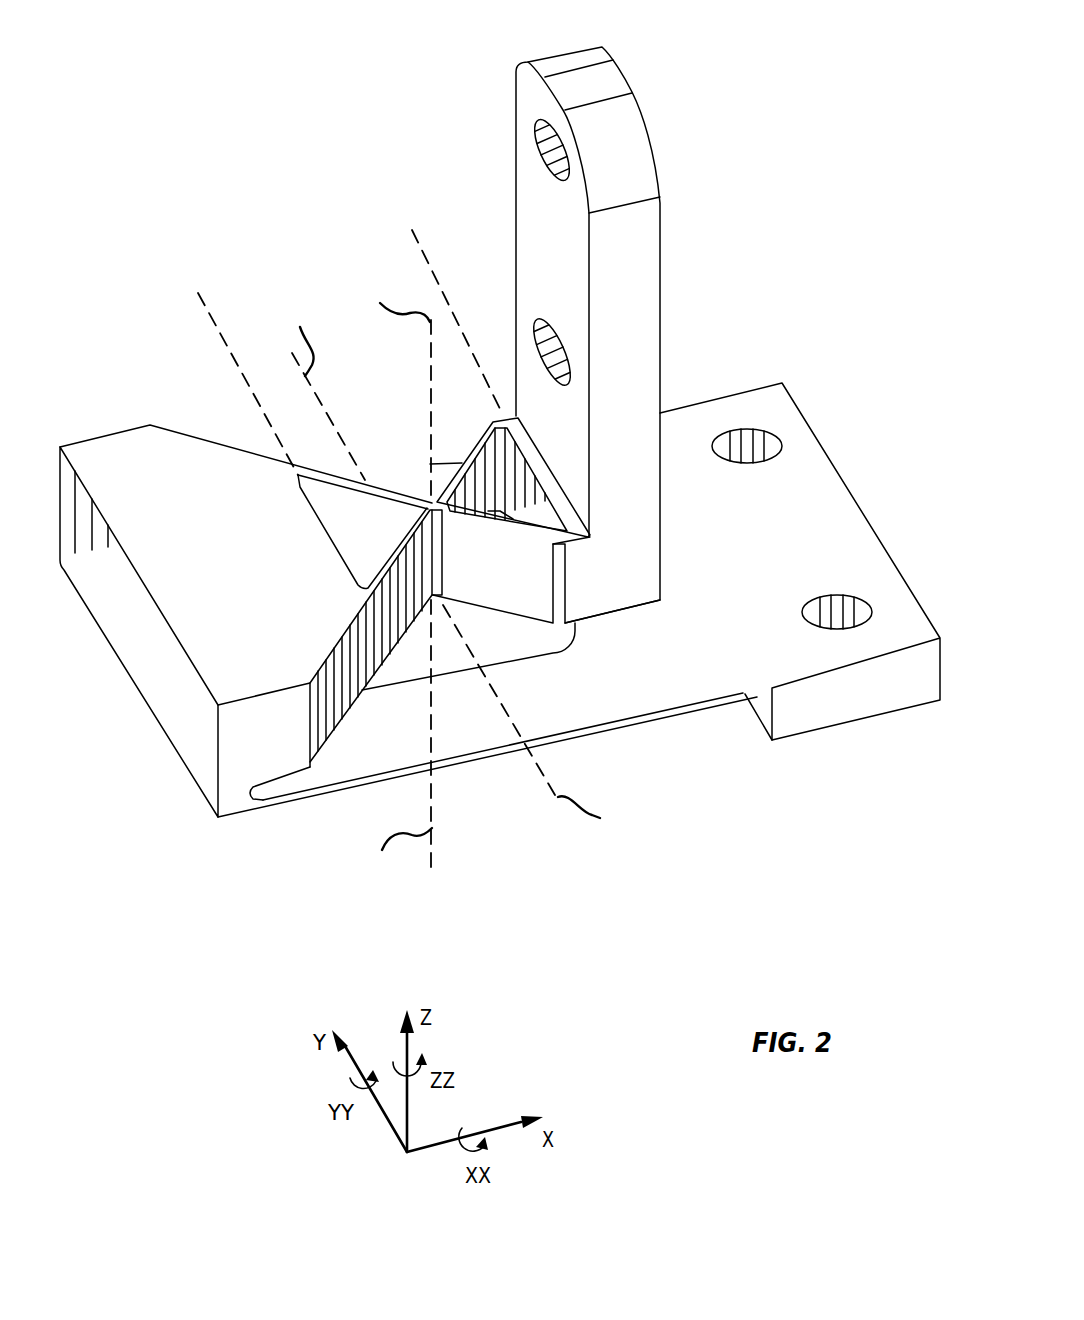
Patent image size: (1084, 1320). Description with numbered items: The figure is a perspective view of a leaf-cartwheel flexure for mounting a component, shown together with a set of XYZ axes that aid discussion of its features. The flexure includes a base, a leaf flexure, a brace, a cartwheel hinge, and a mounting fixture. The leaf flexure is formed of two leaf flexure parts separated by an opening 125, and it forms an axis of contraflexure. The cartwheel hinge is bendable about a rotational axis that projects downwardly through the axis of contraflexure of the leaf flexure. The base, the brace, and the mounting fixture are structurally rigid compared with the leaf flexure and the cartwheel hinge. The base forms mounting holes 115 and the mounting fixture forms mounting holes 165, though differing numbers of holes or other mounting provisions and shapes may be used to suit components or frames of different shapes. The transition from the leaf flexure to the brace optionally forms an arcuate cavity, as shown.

The mounting holes 115 is at (746, 427).
The opening 125 is at (510, 640).
The mounting holes 165 is at (532, 357).